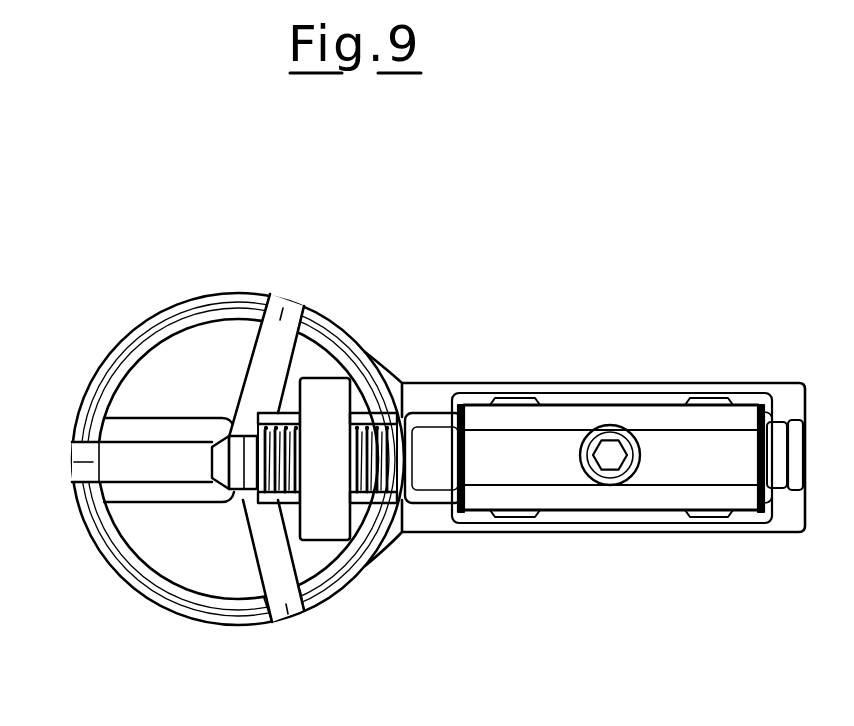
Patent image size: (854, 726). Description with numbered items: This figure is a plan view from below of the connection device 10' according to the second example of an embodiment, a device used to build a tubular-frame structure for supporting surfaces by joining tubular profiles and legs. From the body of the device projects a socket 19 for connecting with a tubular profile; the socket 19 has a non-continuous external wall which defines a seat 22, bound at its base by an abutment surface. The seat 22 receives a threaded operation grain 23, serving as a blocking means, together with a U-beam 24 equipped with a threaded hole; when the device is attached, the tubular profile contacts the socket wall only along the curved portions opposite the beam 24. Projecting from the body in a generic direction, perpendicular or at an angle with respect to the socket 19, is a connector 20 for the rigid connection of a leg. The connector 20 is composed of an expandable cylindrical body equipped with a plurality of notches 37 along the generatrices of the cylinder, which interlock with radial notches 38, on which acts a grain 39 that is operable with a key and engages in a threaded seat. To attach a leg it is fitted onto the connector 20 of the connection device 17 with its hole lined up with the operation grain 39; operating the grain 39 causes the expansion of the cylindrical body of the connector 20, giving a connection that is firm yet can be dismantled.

The connection device 10' is at (495, 239).
The connection device 17 is at (104, 329).
The socket 19 is at (781, 540).
The connector 20 is at (167, 601).
The seat 22 is at (432, 445).
The threaded operation grain 23 is at (570, 465).
The U-beam 24 is at (661, 420).
The notches 37 is at (298, 300).
The radial notches 38 is at (262, 355).
The grain 39 is at (362, 505).